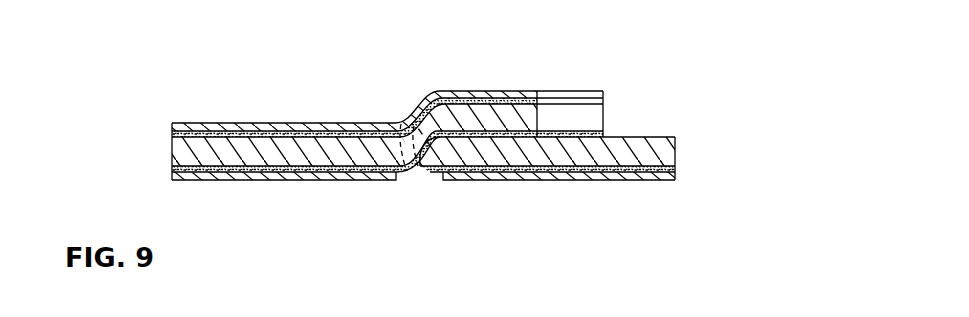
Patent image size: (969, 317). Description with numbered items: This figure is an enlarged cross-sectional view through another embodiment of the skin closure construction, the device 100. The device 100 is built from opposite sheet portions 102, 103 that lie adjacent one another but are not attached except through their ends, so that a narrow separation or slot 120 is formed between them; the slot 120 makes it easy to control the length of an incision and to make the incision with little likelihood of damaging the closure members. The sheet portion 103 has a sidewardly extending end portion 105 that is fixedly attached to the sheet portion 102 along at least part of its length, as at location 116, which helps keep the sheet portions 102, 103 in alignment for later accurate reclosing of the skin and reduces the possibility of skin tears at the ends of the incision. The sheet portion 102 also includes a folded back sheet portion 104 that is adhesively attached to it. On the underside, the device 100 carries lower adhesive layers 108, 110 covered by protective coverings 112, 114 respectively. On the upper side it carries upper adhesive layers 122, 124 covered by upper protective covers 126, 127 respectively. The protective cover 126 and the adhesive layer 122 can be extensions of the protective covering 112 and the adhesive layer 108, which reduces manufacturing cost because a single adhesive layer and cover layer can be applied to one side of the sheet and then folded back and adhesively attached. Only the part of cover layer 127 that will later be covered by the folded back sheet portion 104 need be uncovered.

The device 100 is at (708, 98).
The sheet portion 102 is at (657, 157).
The sheet portion 103 is at (208, 155).
The folded back sheet portion 104 is at (585, 112).
The end portion 105 is at (493, 113).
The lower adhesive layer 108 is at (642, 182).
The lower adhesive layer 110 is at (277, 170).
The protective covering 112 is at (548, 176).
The protective covering 114 is at (354, 174).
The location 116 is at (463, 143).
The slot 120 is at (404, 192).
The upper adhesive layer 122 is at (561, 101).
The upper adhesive layer 124 is at (355, 125).
The upper protective cover 126 is at (548, 100).
The upper protective cover 127 is at (267, 112).